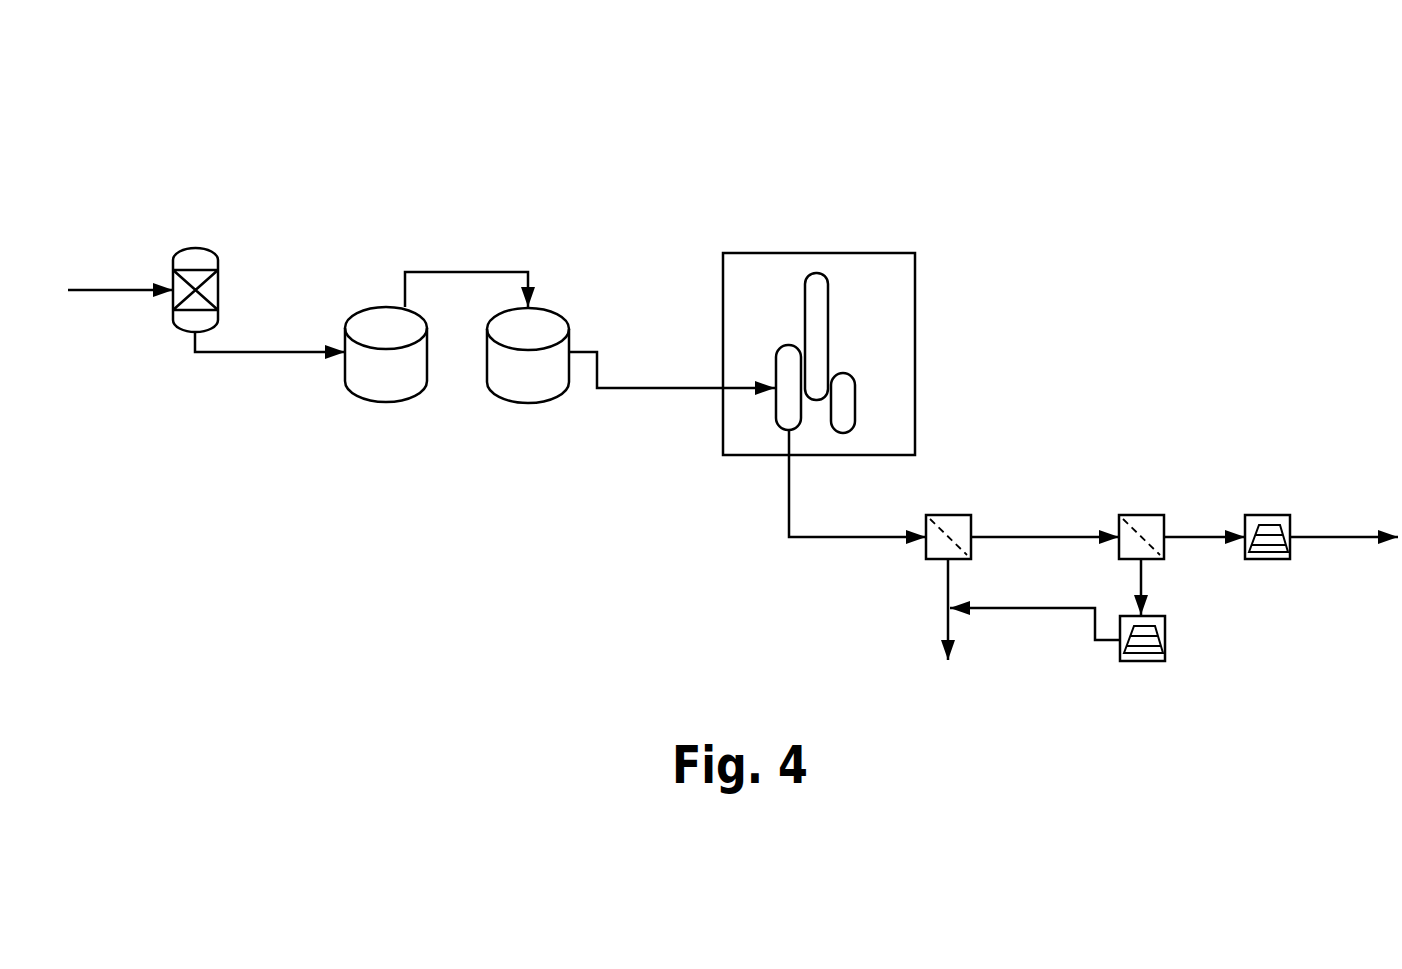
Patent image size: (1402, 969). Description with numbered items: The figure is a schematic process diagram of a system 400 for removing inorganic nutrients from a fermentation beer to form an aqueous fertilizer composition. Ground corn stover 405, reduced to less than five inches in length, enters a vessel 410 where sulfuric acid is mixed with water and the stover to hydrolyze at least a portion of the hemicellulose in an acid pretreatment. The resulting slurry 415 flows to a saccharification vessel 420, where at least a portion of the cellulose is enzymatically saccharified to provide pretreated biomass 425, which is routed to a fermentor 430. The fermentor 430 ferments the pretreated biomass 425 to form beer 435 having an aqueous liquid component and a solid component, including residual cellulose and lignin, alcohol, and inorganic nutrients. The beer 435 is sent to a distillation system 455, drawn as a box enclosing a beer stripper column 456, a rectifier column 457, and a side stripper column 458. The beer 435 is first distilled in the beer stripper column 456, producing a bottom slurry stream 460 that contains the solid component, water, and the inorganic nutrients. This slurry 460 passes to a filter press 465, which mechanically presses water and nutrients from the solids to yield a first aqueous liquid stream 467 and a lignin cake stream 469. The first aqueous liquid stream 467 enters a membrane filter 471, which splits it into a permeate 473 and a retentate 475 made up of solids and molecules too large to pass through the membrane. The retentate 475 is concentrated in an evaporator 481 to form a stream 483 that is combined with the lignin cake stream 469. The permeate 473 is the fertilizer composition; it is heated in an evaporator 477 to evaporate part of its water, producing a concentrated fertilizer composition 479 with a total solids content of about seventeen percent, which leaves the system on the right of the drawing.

The system 400 is at (658, 152).
The ground corn stover 405 is at (91, 292).
The vessel 410 is at (214, 251).
The slurry 415 is at (297, 354).
The saccharification vessel 420 is at (392, 401).
The pretreated biomass 425 is at (468, 271).
The fermentor 430 is at (563, 316).
The beer 435 is at (655, 390).
The distillation system 455 is at (917, 290).
The beer stripper column 456 is at (783, 345).
The rectifier column 457 is at (828, 300).
The side stripper column 458 is at (848, 374).
The bottom slurry stream 460 is at (830, 539).
The filter press 465 is at (972, 525).
The first aqueous liquid stream 467 is at (1071, 536).
The lignin cake stream 469 is at (950, 580).
The membrane filter 471 is at (1165, 525).
The permeate 473 is at (1195, 539).
The retentate 475 is at (1141, 580).
The evaporator 477 is at (1272, 516).
The concentrated fertilizer composition 479 is at (1312, 539).
The evaporator 481 is at (1166, 648).
The stream 483 is at (1035, 610).